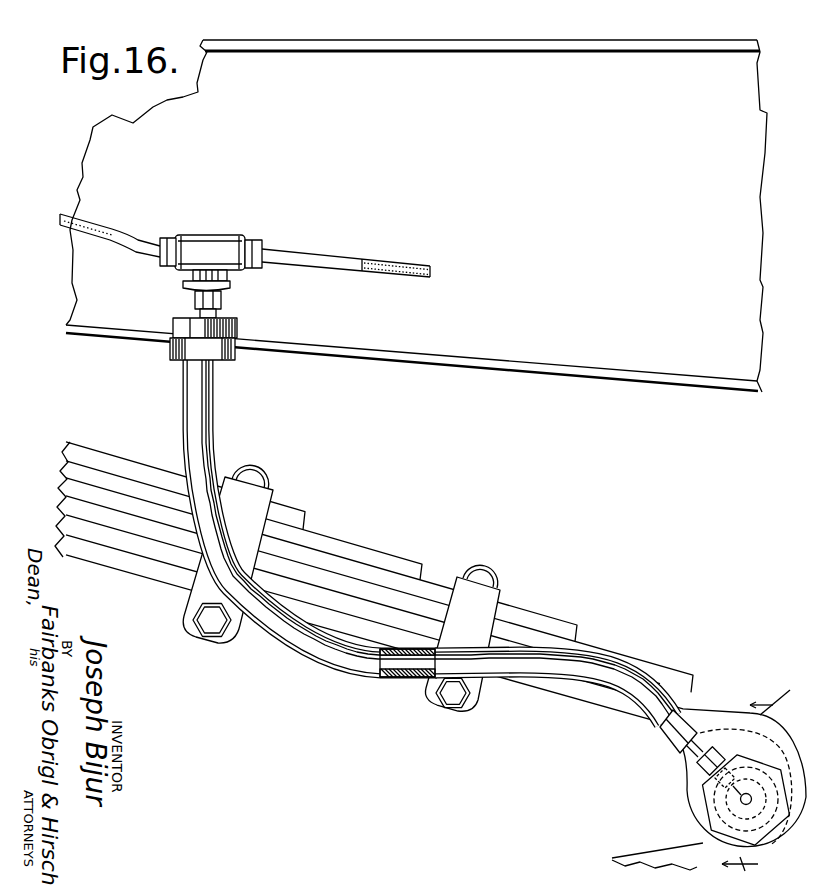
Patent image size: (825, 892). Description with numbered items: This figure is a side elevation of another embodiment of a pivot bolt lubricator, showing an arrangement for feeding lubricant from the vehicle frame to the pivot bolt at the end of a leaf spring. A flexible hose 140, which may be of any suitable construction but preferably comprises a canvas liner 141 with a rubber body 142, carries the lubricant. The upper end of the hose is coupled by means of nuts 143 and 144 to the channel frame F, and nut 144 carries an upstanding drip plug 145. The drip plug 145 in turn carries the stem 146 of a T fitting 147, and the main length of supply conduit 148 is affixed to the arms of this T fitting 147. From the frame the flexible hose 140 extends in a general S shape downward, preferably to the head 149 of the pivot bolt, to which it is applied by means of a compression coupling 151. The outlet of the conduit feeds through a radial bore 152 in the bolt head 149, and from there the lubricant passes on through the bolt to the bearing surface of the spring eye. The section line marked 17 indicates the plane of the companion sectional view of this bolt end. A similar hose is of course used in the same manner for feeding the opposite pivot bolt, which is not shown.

The channel frame F is at (403, 363).
The flexible hose 140 is at (289, 653).
The canvas liner 141 is at (392, 677).
The rubber body 142 is at (412, 680).
The nut 143 is at (224, 360).
The nut 144 is at (238, 326).
The drip plug 145 is at (222, 305).
The stem 146 is at (187, 282).
The T fitting 147 is at (236, 220).
The supply conduit 148 is at (345, 241).
The bolt head 149 is at (716, 831).
The compression coupling 151 is at (708, 772).
The radial bore 152 is at (727, 792).
The section line 17- 17 is at (760, 779).